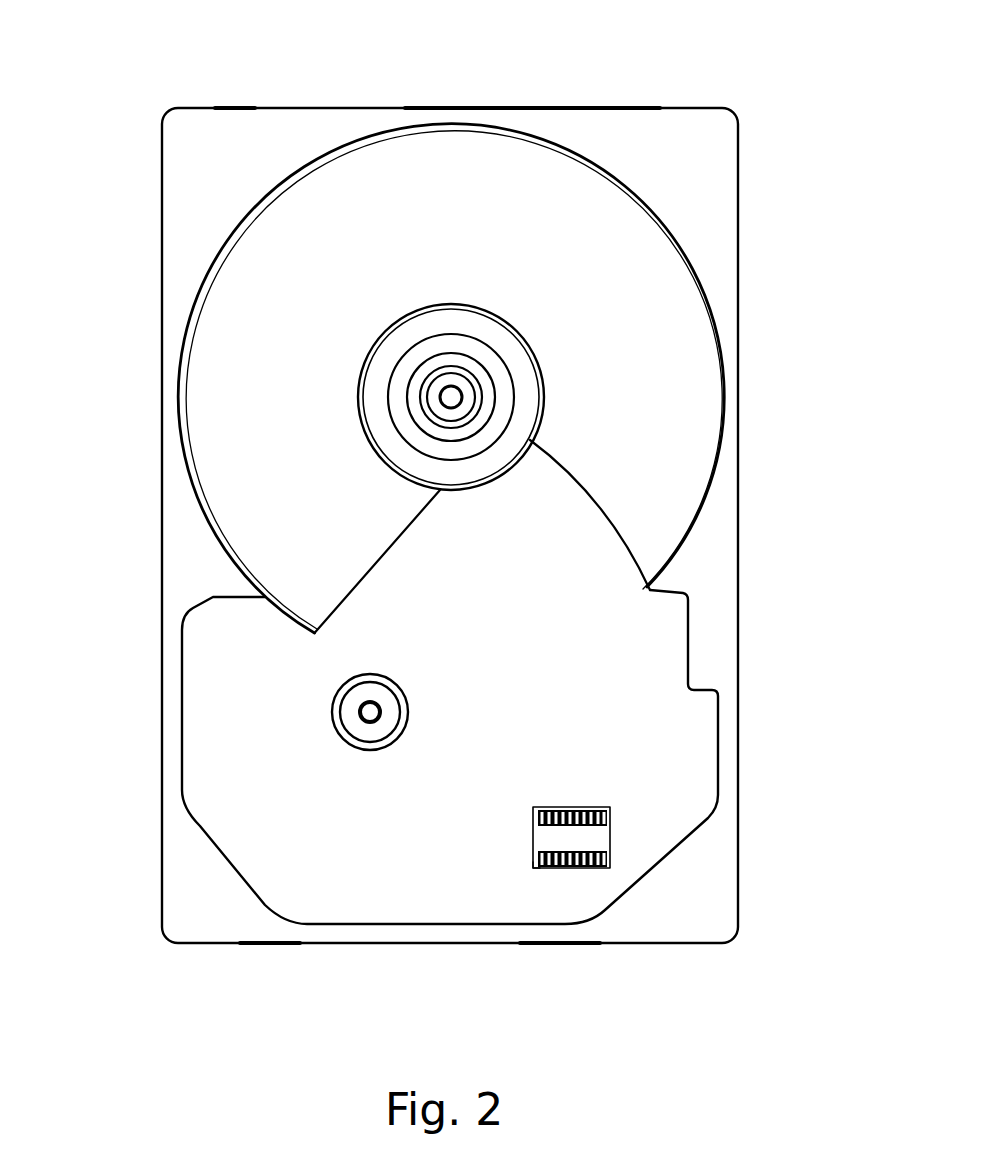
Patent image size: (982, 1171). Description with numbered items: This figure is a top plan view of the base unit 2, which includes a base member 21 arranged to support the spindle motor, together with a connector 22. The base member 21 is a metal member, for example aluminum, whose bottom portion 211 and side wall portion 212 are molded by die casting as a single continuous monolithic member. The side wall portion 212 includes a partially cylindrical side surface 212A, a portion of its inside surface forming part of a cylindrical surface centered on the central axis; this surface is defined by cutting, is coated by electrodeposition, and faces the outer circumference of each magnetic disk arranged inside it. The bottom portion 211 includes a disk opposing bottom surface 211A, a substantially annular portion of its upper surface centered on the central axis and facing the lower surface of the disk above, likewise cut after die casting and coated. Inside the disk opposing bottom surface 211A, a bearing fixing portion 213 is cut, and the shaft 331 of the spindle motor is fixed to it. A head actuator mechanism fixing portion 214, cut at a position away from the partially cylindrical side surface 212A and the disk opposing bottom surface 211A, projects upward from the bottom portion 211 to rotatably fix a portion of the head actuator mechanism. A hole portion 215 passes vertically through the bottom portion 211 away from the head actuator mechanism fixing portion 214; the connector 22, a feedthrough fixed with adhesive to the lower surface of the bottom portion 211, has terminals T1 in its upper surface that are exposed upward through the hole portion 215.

The base unit 2 is at (559, 75).
The base member 21 is at (673, 108).
The bottom portion 211 is at (390, 902).
The disk opposing bottom surface 211A is at (227, 343).
The side wall portion 212 is at (391, 339).
The partially cylindrical side surface 212A is at (318, 152).
The bearing fixing portion 213 is at (588, 367).
The head actuator mechanism fixing portion 214 is at (400, 700).
The hole portion 215 is at (610, 818).
The connector 22 is at (639, 876).
The shaft 331 is at (455, 388).
The terminals T1 is at (534, 868).